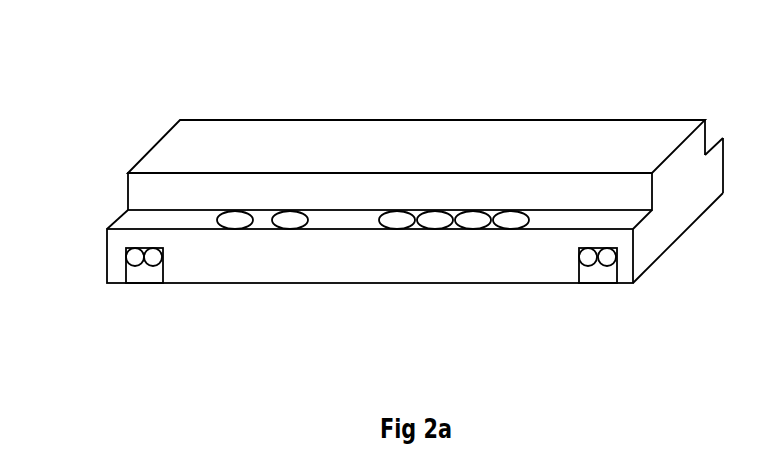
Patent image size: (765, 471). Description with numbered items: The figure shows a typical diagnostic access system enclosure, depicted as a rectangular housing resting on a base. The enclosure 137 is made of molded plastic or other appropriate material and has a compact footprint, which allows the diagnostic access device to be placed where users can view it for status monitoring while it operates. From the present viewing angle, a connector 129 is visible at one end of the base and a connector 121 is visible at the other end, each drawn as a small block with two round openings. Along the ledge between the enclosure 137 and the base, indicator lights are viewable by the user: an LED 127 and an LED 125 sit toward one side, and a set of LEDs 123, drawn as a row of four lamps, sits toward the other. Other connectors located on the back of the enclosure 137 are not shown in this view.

The enclosure 137 is at (232, 132).
The connector 129 is at (145, 265).
The connector 121 is at (598, 267).
The LED 127 is at (235, 230).
The LED 125 is at (290, 230).
The LED set 123 is at (398, 238).